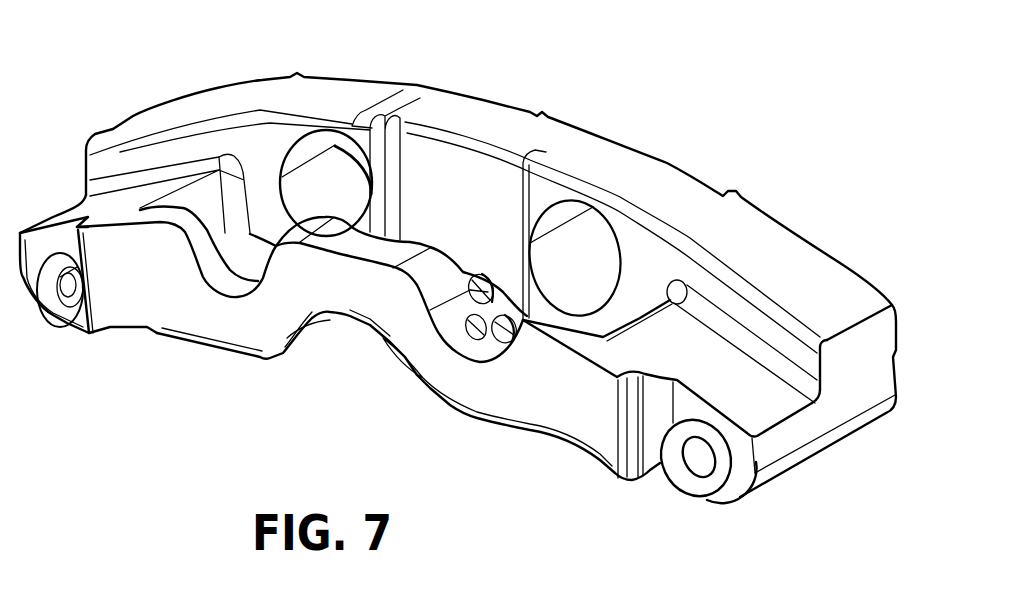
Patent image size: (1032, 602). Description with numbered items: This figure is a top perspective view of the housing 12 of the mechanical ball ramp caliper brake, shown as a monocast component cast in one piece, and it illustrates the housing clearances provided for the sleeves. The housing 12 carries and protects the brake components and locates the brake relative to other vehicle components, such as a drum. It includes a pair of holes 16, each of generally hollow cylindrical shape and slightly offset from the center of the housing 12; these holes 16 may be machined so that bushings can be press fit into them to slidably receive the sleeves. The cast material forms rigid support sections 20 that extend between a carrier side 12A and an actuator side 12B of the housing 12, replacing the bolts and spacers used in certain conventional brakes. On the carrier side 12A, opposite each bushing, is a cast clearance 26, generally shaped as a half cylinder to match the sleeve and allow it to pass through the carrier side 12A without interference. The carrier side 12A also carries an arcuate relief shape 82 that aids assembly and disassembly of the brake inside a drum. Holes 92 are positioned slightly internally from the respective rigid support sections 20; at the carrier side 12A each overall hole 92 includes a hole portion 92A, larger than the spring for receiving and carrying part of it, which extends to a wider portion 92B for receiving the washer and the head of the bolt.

The housing 12 is at (727, 134).
The carrier side 12A is at (158, 337).
The actuator side 12B is at (818, 236).
The holes 16 is at (585, 278).
The rigid support sections 20 is at (828, 450).
The cast clearance 26 is at (447, 313).
The arcuate relief shape 82 is at (358, 318).
The holes 92 is at (663, 492).
The hole portion 92A is at (703, 466).
The wider portion 92B is at (671, 493).